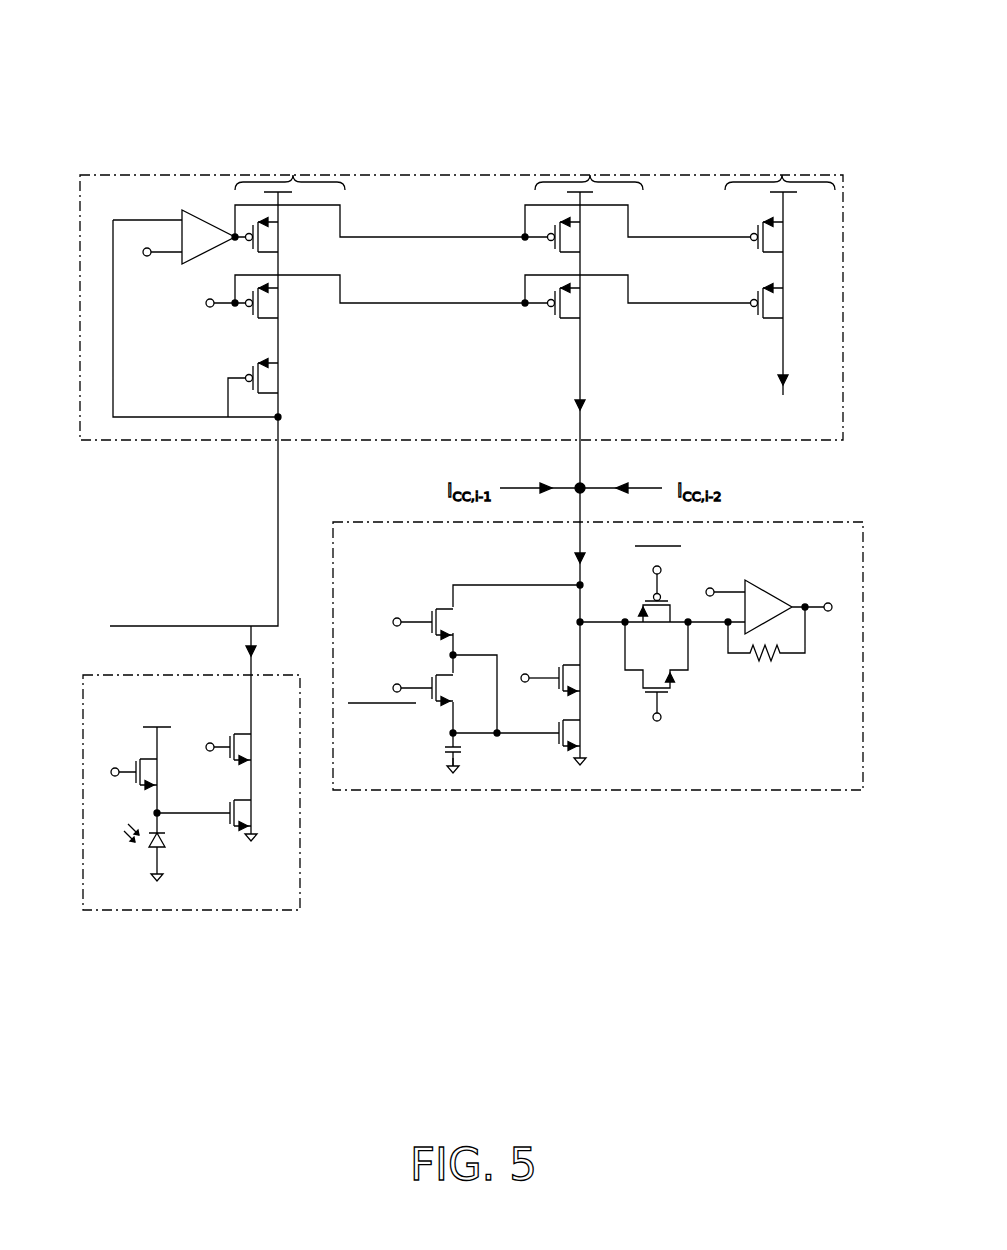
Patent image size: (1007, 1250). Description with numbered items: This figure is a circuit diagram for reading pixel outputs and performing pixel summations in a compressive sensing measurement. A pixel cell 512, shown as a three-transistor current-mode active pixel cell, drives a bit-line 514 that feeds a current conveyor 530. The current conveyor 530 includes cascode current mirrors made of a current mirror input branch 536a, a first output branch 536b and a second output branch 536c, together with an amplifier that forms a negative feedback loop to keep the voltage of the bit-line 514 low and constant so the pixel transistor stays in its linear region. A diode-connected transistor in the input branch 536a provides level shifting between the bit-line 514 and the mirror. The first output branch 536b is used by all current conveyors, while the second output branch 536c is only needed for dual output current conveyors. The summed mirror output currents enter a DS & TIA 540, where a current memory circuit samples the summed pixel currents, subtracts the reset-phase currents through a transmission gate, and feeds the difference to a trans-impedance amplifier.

The current conveyor 530 is at (457, 174).
The current mirror input branch 536a is at (293, 174).
The first output branch of the current mirror 536b is at (590, 174).
The second output branch of the current mirror 536c is at (782, 174).
The bit-line 514 is at (112, 624).
The pixel cell 512 is at (147, 912).
The DS & TIA 540 is at (803, 790).